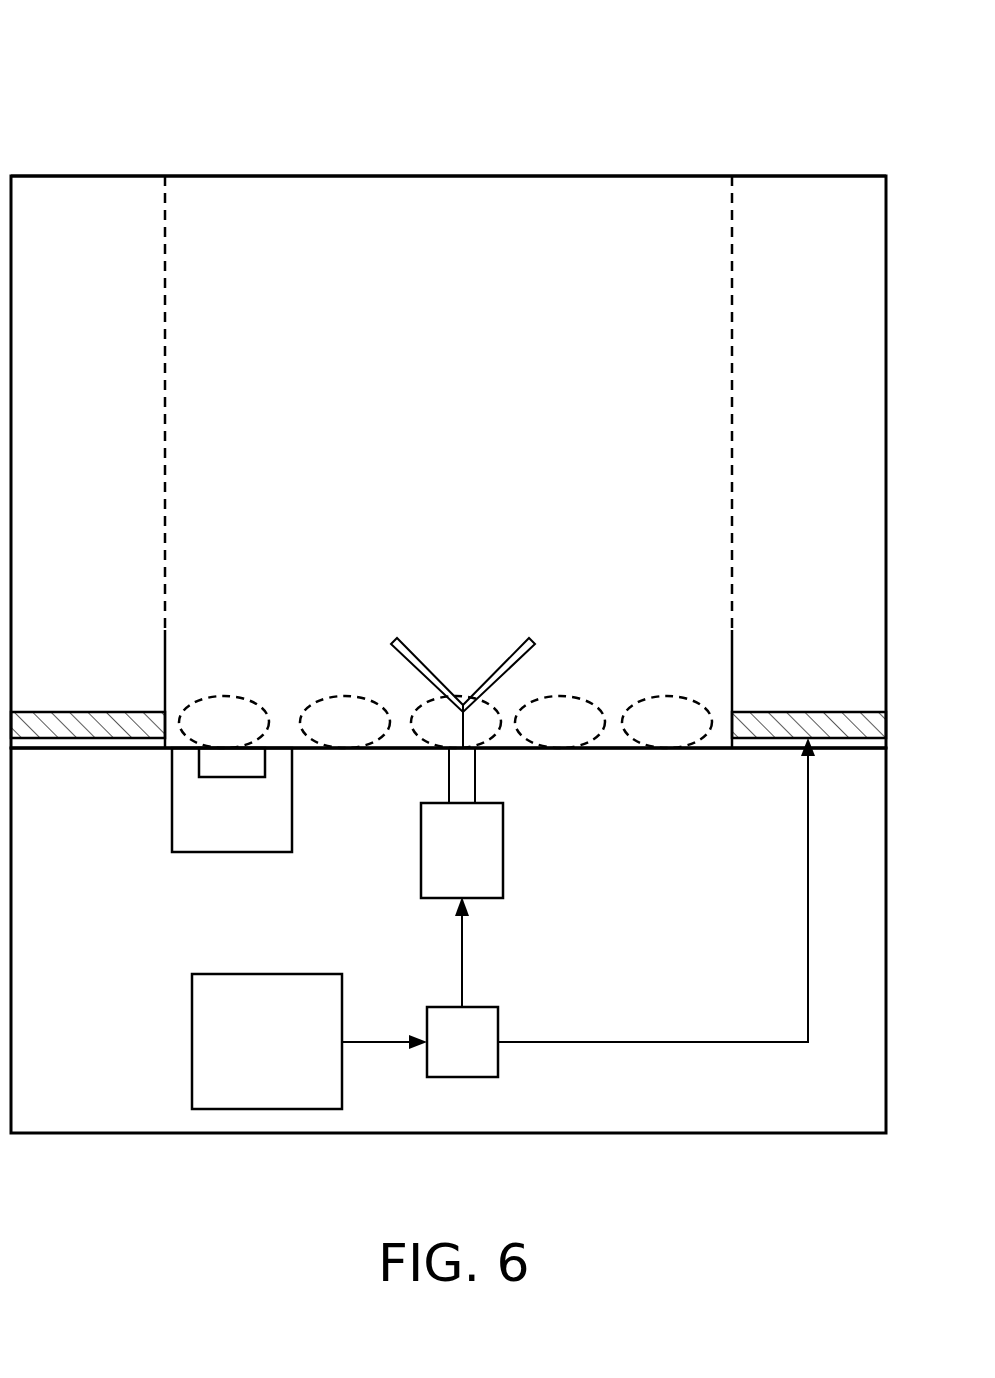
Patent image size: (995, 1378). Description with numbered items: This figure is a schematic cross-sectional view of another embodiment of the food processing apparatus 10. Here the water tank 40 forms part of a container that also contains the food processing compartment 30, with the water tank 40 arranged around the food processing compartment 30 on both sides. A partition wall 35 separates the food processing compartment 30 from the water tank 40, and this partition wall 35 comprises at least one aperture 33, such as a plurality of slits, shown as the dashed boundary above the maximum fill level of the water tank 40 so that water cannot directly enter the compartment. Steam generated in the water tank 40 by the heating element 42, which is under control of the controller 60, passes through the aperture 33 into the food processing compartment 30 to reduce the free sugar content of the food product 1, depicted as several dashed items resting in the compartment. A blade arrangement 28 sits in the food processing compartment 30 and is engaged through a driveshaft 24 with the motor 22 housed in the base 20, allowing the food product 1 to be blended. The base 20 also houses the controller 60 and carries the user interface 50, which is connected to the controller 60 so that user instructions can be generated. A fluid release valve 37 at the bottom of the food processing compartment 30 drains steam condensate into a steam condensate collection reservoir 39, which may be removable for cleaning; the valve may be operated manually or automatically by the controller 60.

The food product 1 is at (247, 697).
The food processing apparatus 10 is at (80, 76).
The base 20 is at (750, 1135).
The motor 22 is at (504, 843).
The driveshaft 24 is at (476, 772).
The blade arrangement 28 is at (398, 645).
The food processing compartment 30 is at (456, 175).
The aperture 33 is at (166, 278).
The partition wall 35 is at (730, 646).
The fluid release valve 37 is at (228, 765).
The steam condensate collection reservoir 39 is at (185, 823).
The water tank 40 is at (88, 175).
The heating element 42 is at (88, 711).
The user interface 50 is at (200, 1030).
The controller 60 is at (499, 1064).